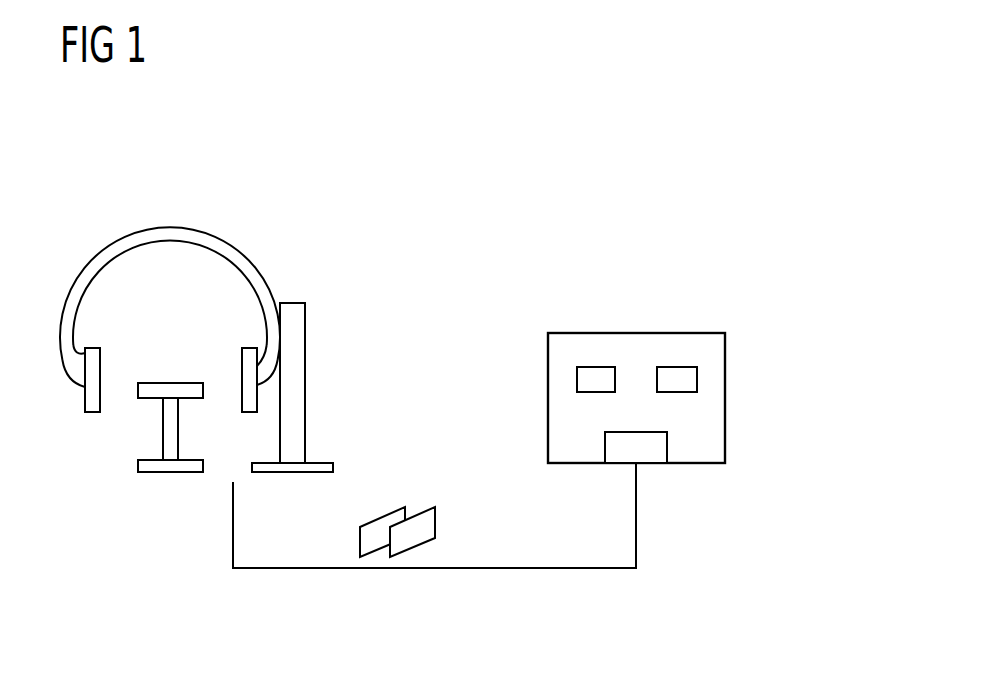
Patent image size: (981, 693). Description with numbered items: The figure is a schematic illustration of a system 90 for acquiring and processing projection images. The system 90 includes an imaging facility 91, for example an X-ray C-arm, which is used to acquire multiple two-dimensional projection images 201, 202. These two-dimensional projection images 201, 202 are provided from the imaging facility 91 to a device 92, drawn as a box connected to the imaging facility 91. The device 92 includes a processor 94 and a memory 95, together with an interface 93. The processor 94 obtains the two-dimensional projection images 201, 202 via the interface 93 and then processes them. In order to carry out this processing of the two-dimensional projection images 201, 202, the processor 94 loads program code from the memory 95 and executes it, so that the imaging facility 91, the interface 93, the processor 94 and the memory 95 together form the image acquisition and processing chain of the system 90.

The system 90 is at (718, 127).
The imaging facility 91 is at (294, 193).
The device 92 is at (635, 333).
The interface 93 is at (635, 432).
The processor 94 is at (597, 393).
The memory 95 is at (677, 393).
The 2-D projection image 201 is at (478, 421).
The 2-D projection image 202 is at (412, 532).